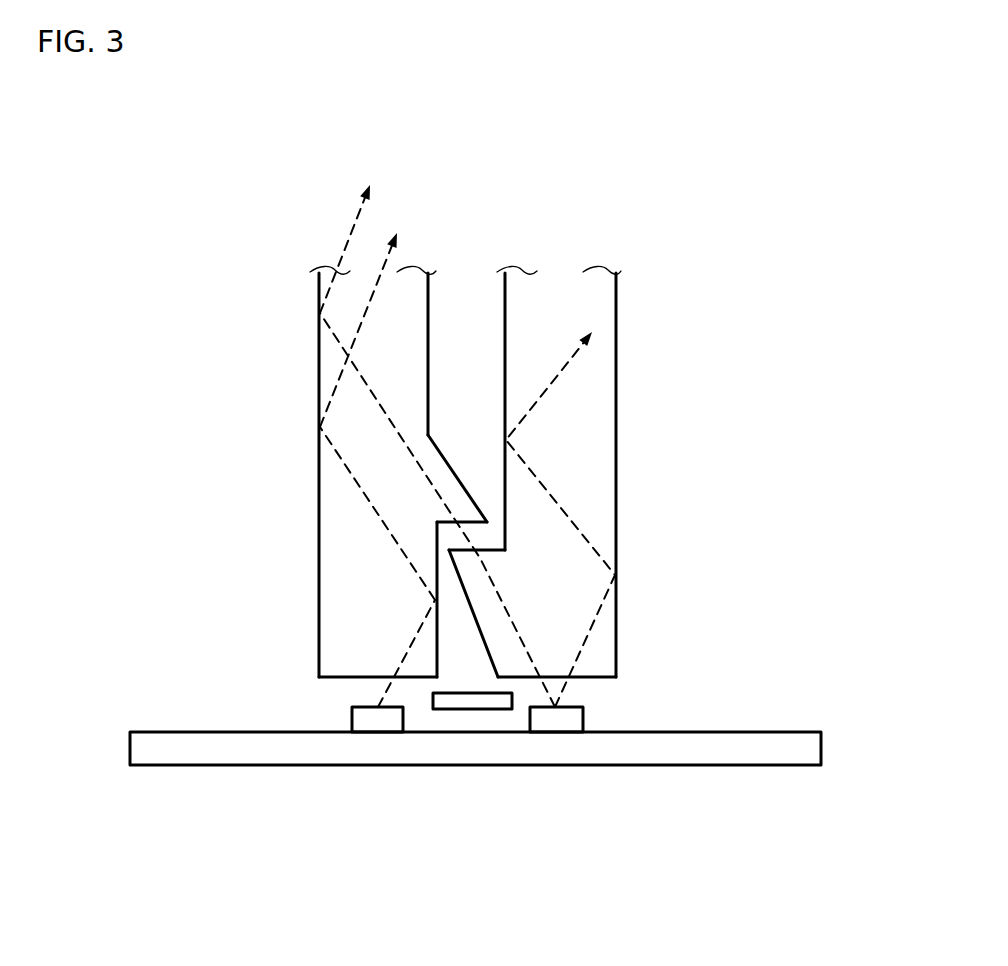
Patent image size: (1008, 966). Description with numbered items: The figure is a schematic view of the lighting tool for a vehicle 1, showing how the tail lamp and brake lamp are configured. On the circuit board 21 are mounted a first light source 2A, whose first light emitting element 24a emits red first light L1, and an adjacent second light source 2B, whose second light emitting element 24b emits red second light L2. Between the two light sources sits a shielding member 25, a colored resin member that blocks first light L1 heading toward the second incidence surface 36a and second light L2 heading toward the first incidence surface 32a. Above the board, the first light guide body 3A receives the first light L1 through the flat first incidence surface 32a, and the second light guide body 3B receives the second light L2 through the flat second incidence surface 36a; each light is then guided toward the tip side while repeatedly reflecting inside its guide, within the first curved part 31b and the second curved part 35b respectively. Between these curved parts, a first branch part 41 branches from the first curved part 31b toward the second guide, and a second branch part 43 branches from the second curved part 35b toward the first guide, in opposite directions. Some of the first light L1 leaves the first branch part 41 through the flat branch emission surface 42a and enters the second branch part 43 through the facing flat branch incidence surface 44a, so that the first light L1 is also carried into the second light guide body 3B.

The lighting tool for a vehicle 1 is at (110, 111).
The circuit board 21 is at (816, 748).
The first light emitting element 24a is at (565, 825).
The first light source 2A is at (562, 722).
The second light emitting element 24b is at (388, 825).
The second light source 2B is at (370, 722).
The shielding member 25 is at (473, 709).
The first light guide body 3A is at (622, 560).
The second light guide body 3B is at (491, 560).
The first curved part 31b is at (705, 475).
The first incidence surface 32a is at (589, 766).
The second curved part 35b is at (253, 475).
The second incidence surface 36a is at (349, 766).
The first branch part 41 is at (470, 607).
The branch emission surface 42a is at (622, 532).
The second branch part 43 is at (450, 463).
The branch incidence surface 44a is at (616, 484).
The first light L1 is at (350, 222).
The second light L2 is at (367, 502).